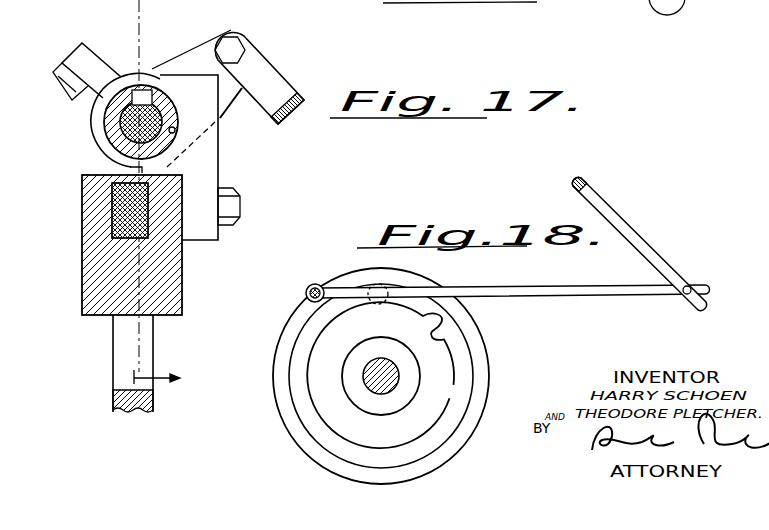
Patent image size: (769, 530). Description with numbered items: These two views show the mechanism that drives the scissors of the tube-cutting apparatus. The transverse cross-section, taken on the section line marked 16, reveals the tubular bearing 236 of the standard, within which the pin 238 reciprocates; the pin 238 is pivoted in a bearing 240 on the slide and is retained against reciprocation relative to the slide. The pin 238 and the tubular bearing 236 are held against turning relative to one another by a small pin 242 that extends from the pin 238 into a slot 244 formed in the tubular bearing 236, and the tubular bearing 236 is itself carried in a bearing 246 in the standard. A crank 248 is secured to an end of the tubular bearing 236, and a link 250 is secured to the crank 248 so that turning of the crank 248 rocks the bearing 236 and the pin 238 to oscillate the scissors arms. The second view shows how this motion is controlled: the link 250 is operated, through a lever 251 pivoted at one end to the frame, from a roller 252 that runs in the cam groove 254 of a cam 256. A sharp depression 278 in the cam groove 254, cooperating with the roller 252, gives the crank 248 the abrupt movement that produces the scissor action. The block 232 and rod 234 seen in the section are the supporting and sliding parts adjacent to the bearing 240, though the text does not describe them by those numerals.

In FIG. 17, the section line 16- 16 is at (172, 199).
In FIG. 17, the nut 232 is at (122, 215).
In FIG. 17, the rod 234 is at (90, 348).
In FIG. 17, the tubular bearing 236 is at (170, 143).
In FIG. 17, the pin 238 is at (125, 126).
In FIG. 17, the bearing 240 is at (117, 143).
In FIG. 17, the pin 242 is at (143, 97).
In FIG. 17, the slot 244 is at (128, 100).
In FIG. 17, the bearing 246 is at (175, 131).
In FIG. 17, the crank 248 is at (108, 51).
In FIG. 17, the link 250 is at (259, 67).
In FIG. 18, the link 250 is at (648, 248).
In FIG. 18, the lever 251 is at (615, 293).
In FIG. 18, the roller 252 is at (393, 286).
In FIG. 18, the cam groove 254 is at (463, 357).
In FIG. 18, the cam 256 is at (494, 383).
In FIG. 18, the sharp depression 278 is at (427, 327).